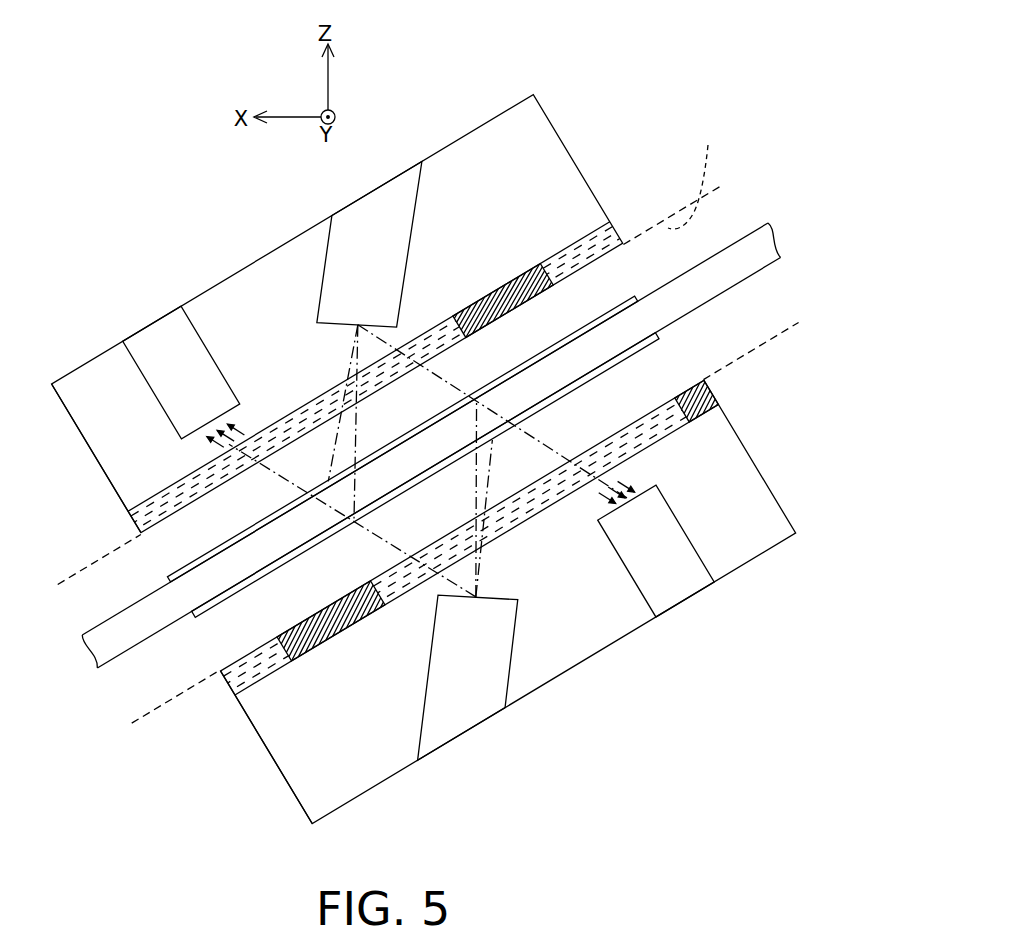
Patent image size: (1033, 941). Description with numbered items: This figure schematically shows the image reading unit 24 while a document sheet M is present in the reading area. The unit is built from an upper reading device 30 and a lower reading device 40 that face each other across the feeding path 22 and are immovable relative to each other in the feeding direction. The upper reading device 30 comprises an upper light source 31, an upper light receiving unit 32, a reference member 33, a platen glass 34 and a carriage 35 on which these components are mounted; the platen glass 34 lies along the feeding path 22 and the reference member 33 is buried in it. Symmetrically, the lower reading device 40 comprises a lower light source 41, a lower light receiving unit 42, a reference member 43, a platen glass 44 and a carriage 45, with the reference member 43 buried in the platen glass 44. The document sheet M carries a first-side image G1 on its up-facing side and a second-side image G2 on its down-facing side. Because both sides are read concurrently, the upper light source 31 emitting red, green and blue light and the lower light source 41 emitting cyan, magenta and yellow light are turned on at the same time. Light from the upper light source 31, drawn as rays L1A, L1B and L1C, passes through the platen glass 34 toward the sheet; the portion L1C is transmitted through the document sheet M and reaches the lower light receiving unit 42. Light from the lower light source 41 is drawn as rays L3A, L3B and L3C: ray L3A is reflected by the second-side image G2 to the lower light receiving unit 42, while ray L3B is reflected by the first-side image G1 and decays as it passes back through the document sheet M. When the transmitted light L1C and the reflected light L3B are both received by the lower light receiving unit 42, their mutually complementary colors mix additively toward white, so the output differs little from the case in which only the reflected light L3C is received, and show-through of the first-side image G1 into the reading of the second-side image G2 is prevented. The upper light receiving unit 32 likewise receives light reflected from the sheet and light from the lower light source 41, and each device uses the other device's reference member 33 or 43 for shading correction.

The feeding path 22 is at (694, 173).
The image reading unit 24 is at (459, 110).
The upper reading device 30 is at (560, 130).
The upper light source 31 is at (342, 252).
The upper light receiving unit 32 is at (157, 377).
The reference member 33 is at (505, 293).
The platen glass 34 is at (167, 512).
The carriage 35 is at (73, 437).
The lower reading device 40 is at (755, 445).
The lower light source 41 is at (493, 667).
The lower light receiving unit 42 is at (677, 548).
The reference member 43 is at (307, 642).
The platen glass 44 is at (681, 400).
The carriage 45 is at (275, 764).
The document sheet M is at (757, 250).
The first-side image G1 is at (632, 306).
The second-side image G2 is at (652, 342).
The first light beam A L1A is at (350, 357).
The first light beam B L1B is at (360, 433).
The transmitted light L1C is at (447, 377).
The reflected light L3A is at (477, 579).
The reflected light L3B is at (478, 490).
The reflected light L3C is at (387, 543).